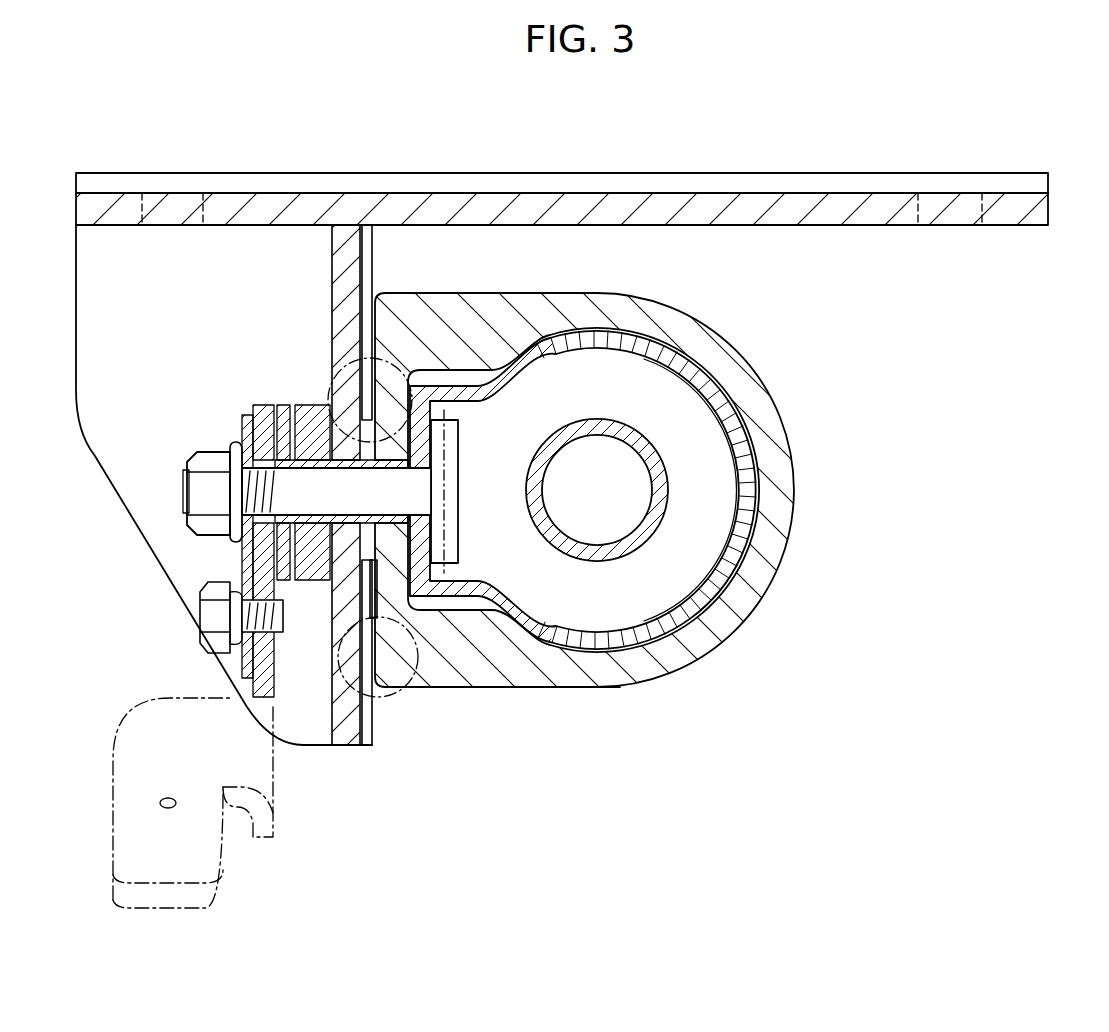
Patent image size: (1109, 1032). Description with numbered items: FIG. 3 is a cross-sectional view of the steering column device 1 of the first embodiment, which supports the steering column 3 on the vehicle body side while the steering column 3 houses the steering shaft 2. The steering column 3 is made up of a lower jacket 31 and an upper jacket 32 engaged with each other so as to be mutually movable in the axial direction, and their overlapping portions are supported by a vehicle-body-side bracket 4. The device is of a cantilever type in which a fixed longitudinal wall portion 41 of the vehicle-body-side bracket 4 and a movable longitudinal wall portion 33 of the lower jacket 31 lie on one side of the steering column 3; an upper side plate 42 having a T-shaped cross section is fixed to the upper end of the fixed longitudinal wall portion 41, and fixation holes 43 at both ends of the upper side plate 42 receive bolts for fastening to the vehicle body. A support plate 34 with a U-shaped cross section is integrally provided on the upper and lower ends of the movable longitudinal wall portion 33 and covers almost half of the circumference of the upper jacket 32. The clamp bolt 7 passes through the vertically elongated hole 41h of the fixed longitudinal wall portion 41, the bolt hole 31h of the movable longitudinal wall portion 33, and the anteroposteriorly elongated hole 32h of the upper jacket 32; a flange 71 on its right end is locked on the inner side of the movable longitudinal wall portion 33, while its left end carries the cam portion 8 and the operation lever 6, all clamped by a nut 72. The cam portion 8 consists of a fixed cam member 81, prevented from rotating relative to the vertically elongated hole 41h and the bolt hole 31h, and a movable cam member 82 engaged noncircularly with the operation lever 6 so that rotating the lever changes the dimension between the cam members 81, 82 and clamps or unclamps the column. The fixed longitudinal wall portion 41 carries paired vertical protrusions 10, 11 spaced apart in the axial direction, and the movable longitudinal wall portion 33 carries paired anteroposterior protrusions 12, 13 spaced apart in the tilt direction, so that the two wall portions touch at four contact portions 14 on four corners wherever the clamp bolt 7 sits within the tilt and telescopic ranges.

The steering column device 1 is at (1040, 103).
The steering shaft 2 is at (597, 545).
The steering column 3 is at (793, 422).
The vehicle-body-side bracket 4 is at (869, 172).
The operation lever 6 is at (285, 820).
The clamp bolt 7 is at (186, 485).
The cam portion 8 is at (178, 368).
The vertical protrusion 10 is at (381, 230).
The vertical protrusion 11 is at (380, 233).
The anteroposterior protrusion 12 is at (328, 410).
The anteroposterior protrusion 13 is at (374, 705).
The contact portions 14 is at (352, 378).
The lower jacket 31 is at (782, 503).
The bolt hole 31h is at (436, 500).
The upper jacket 32 is at (748, 572).
The anteroposteriorly elongated hole 32h is at (425, 527).
The movable longitudinal wall portion 33 is at (410, 330).
The support plate 34 is at (583, 688).
The fixed longitudinal wall portion 41 is at (332, 243).
The vertically elongated hole 41h is at (330, 700).
The upper side plate 42 is at (790, 210).
The fixation holes 43 is at (200, 217).
The flange 71 is at (460, 433).
The nut 72 is at (226, 522).
The fixed cam member 81 is at (252, 405).
The movable cam member 82 is at (243, 440).